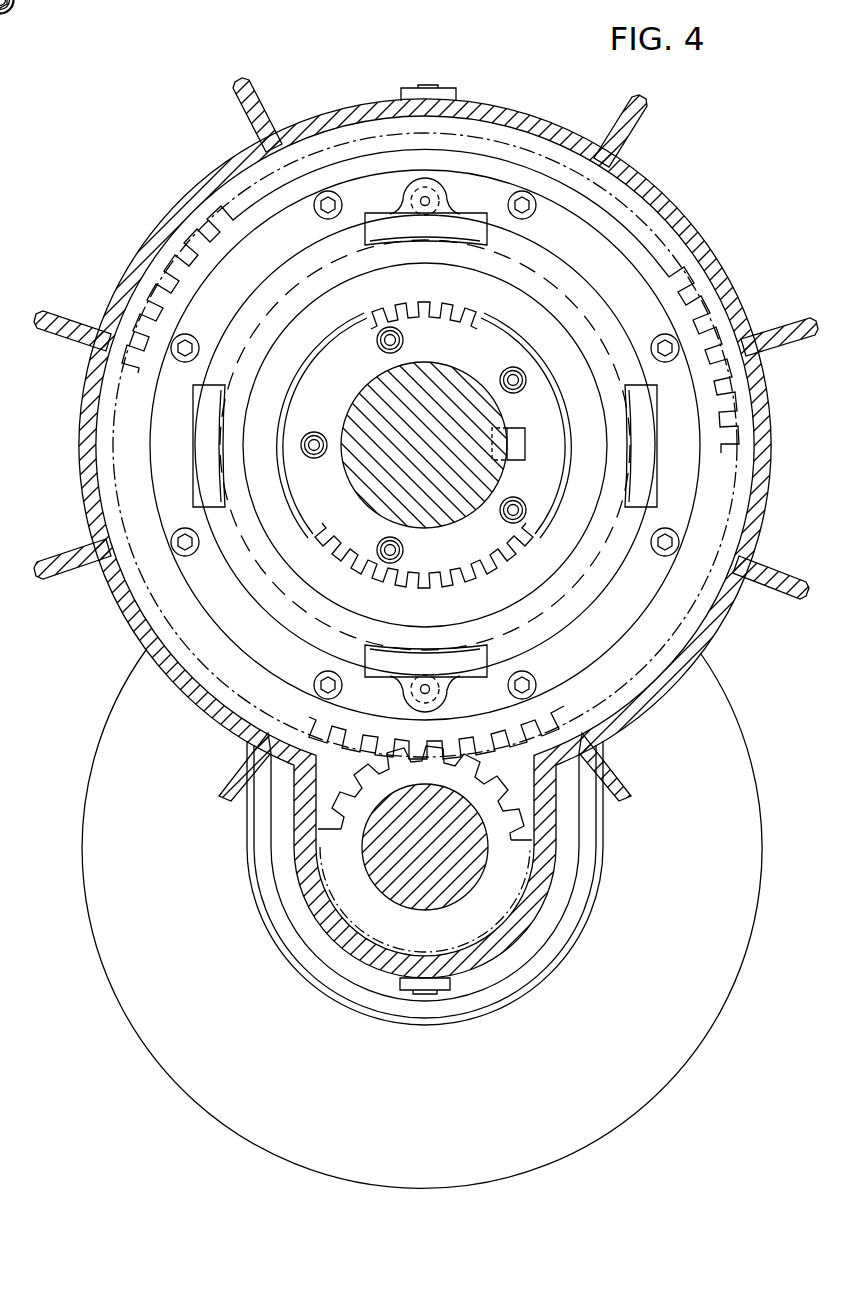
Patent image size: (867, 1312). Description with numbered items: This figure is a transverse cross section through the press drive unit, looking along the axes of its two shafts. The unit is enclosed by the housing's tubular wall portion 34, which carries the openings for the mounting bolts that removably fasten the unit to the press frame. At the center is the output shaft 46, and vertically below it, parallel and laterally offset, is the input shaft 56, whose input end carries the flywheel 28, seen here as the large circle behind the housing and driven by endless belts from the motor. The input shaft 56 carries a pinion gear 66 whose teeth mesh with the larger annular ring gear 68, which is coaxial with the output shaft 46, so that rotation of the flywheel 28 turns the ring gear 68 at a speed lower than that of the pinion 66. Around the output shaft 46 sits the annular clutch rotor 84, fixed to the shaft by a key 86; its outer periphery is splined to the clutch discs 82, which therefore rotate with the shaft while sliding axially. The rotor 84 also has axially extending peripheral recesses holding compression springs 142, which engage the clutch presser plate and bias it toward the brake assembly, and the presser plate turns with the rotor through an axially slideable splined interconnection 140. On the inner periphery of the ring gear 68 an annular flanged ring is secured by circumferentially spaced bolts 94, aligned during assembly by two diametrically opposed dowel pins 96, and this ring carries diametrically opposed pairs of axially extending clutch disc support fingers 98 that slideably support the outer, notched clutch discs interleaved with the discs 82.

The flywheel 28 is at (746, 745).
The tubular wall portion 34 is at (665, 208).
The output shaft 46 is at (437, 384).
The input shaft 56 is at (443, 887).
The pinion gear 66 is at (517, 863).
The annular ring gear 68 is at (670, 620).
The clutch discs 82 is at (518, 592).
The clutch rotor 84 is at (548, 478).
The key 86 is at (518, 446).
The bolts 94 is at (527, 195).
The dowel pins 96 is at (432, 187).
The clutch disc support fingers 98 is at (468, 228).
The splined interconnection 140 is at (513, 551).
The compression springs 142 is at (314, 432).